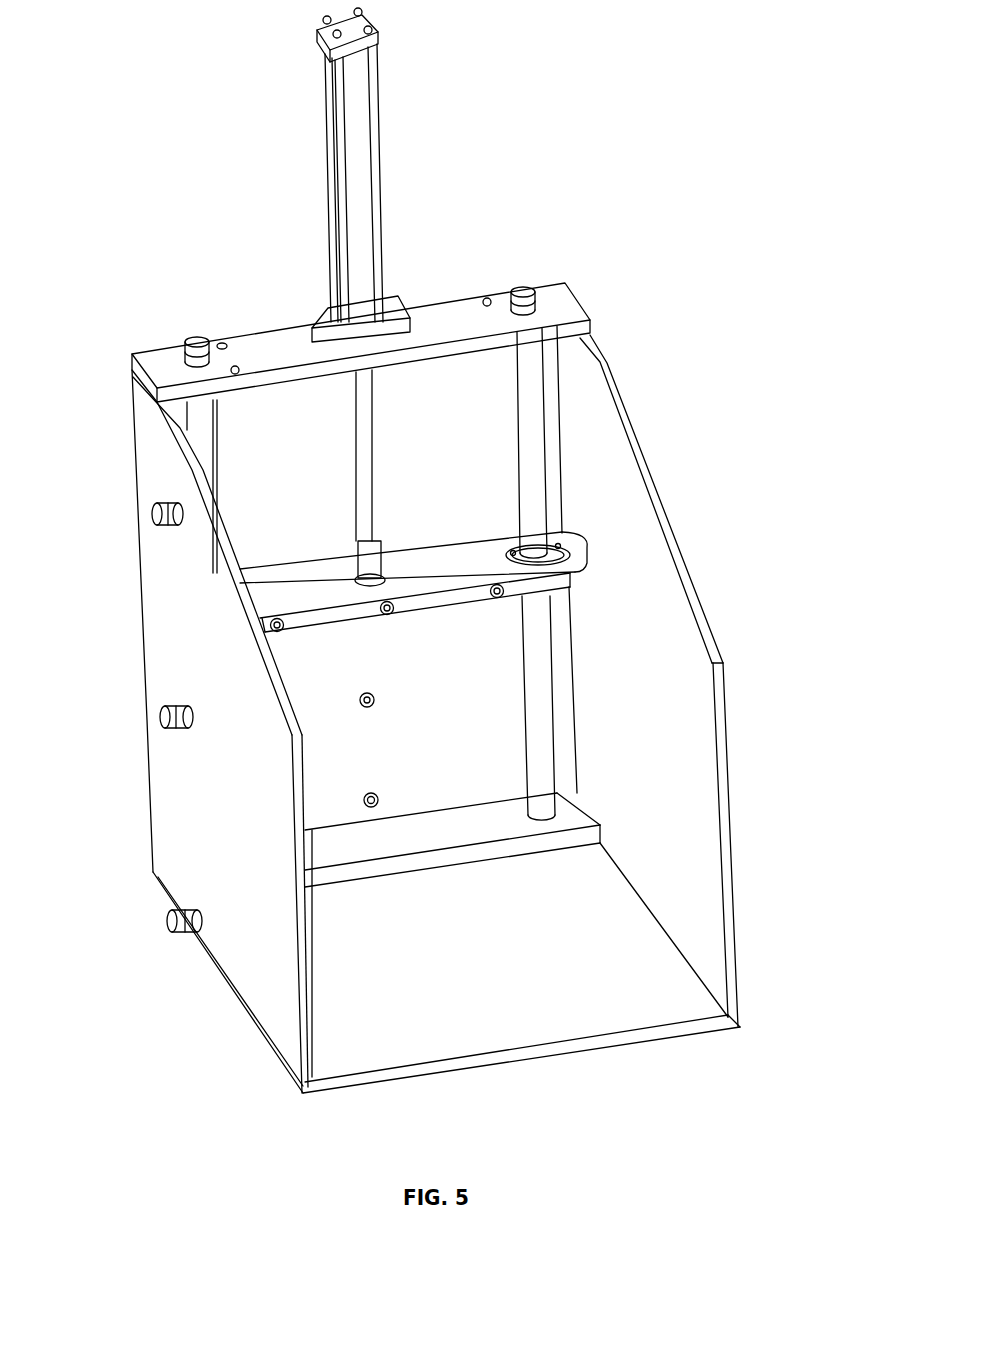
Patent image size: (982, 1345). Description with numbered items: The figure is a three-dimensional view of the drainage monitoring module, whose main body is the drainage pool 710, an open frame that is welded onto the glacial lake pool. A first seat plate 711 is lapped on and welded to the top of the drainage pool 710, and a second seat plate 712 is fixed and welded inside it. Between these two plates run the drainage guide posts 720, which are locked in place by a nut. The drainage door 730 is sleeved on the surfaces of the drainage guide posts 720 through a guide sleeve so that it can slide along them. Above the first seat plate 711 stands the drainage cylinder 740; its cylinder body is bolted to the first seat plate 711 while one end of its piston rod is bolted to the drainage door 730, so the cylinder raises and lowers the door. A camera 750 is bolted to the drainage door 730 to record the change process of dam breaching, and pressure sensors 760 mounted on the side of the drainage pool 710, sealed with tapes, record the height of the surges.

The drainage pool 710 is at (640, 558).
The first seat plate 711 is at (570, 315).
The second seat plate 712 is at (572, 836).
The drainage guide posts 720 is at (530, 446).
The drainage door 730 is at (470, 718).
The drainage cylinder 740 is at (358, 160).
The cameras 750 is at (371, 808).
The pressure sensors 760 is at (157, 517).